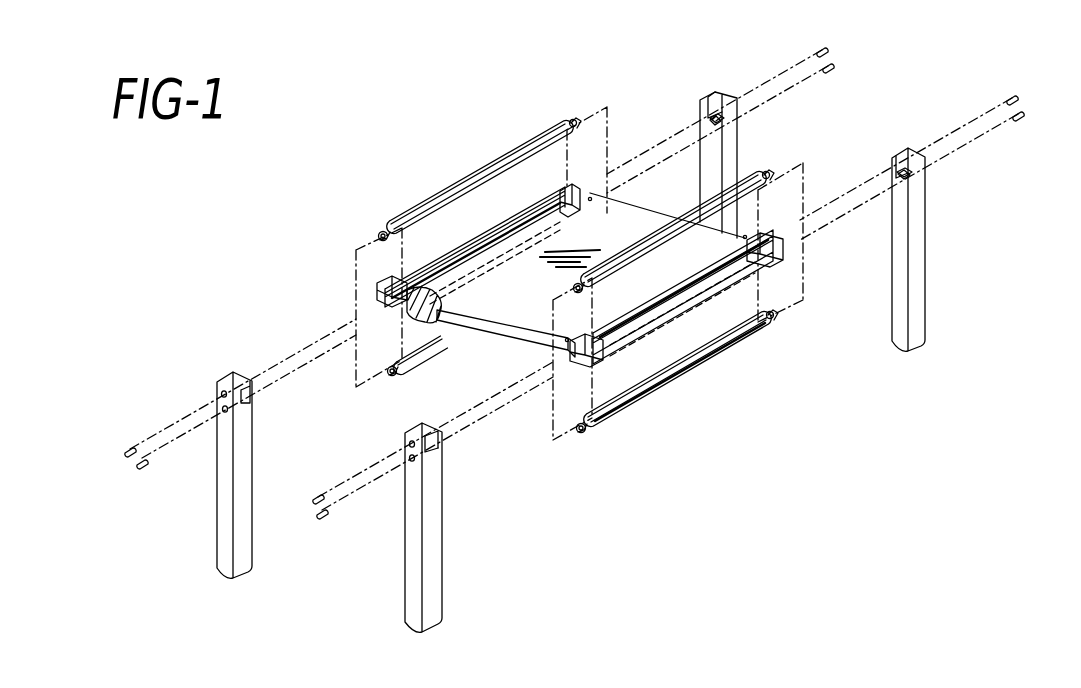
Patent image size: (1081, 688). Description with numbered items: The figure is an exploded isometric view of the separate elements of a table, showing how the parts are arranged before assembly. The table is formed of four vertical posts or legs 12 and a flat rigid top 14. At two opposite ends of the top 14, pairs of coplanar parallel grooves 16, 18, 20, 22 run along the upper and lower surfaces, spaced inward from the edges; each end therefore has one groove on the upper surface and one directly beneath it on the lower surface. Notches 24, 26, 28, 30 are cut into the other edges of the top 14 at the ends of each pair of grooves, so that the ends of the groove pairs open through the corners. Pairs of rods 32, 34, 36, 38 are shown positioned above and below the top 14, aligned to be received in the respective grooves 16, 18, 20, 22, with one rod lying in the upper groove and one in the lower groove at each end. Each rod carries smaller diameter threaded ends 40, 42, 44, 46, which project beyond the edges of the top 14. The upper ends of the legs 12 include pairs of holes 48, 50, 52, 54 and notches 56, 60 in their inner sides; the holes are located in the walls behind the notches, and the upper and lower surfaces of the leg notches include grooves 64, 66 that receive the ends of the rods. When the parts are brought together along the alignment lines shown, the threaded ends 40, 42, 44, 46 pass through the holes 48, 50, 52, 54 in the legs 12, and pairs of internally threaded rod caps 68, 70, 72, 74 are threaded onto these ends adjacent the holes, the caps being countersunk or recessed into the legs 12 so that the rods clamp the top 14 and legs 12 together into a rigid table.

The leg 12 is at (256, 450).
The top 14 is at (510, 320).
The groove 16 is at (695, 280).
The groove 18 is at (660, 318).
The groove 20 is at (502, 226).
The groove 22 is at (448, 284).
The notch 24 is at (757, 240).
The notch 26 is at (578, 358).
The notch 28 is at (572, 185).
The notch 30 is at (390, 305).
The rod 32 is at (642, 250).
The rod 34 is at (664, 382).
The rod 36 is at (472, 170).
The rod 38 is at (408, 372).
The threaded end 40 is at (577, 292).
The threaded end 42 is at (582, 432).
The threaded end 44 is at (382, 226).
The threaded end 46 is at (390, 378).
The hole 48 is at (430, 452).
The hole 50 is at (416, 460).
The hole 52 is at (220, 393).
The hole 54 is at (221, 413).
The notch 56 is at (440, 442).
The notch 60 is at (248, 394).
The groove 64 is at (712, 108).
The groove 66 is at (712, 120).
The rod cap 68 is at (313, 497).
The rod cap 70 is at (320, 516).
The rod cap 72 is at (126, 450).
The rod cap 74 is at (143, 467).